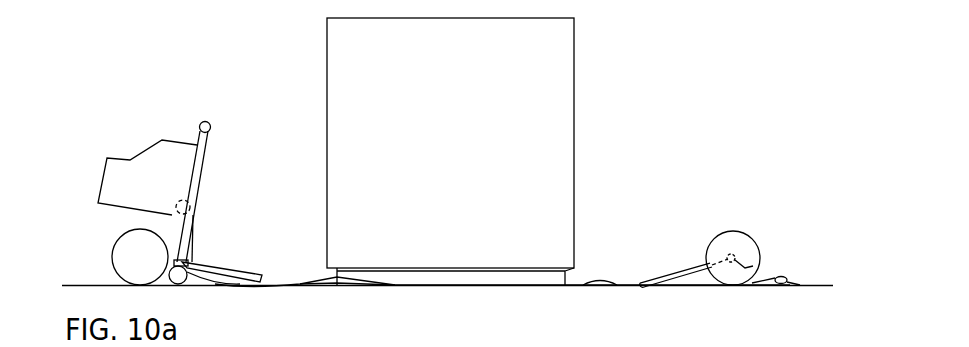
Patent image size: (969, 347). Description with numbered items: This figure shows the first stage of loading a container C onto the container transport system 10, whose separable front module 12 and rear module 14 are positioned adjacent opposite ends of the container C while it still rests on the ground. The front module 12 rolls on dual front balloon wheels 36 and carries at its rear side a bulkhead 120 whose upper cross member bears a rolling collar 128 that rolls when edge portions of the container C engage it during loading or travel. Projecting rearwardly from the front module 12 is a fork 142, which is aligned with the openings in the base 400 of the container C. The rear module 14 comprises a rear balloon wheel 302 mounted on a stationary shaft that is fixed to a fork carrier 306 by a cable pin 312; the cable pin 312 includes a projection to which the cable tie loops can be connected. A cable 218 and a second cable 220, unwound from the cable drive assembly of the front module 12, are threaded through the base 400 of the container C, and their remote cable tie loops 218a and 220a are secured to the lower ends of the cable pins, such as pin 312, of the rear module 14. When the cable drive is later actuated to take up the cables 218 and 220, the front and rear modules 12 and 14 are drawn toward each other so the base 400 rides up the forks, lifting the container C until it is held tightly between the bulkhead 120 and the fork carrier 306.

The container transport system 10 is at (73, 132).
The front module 12 is at (137, 128).
The rear module 14 is at (702, 163).
The balloon wheels 36 is at (125, 257).
The bulkhead 120 is at (258, 158).
The rolling collar 128 is at (209, 124).
The fork 142 is at (247, 279).
The cable 218 is at (588, 286).
The cable tie loop 218a is at (793, 286).
The second cable 220 is at (600, 280).
The cable tie loop 220a is at (780, 278).
The rear balloon wheel 302 is at (715, 250).
The fork carrier 306 is at (735, 256).
The cable pin 312 is at (762, 260).
The container base 400 is at (485, 273).
The container C is at (340, 42).